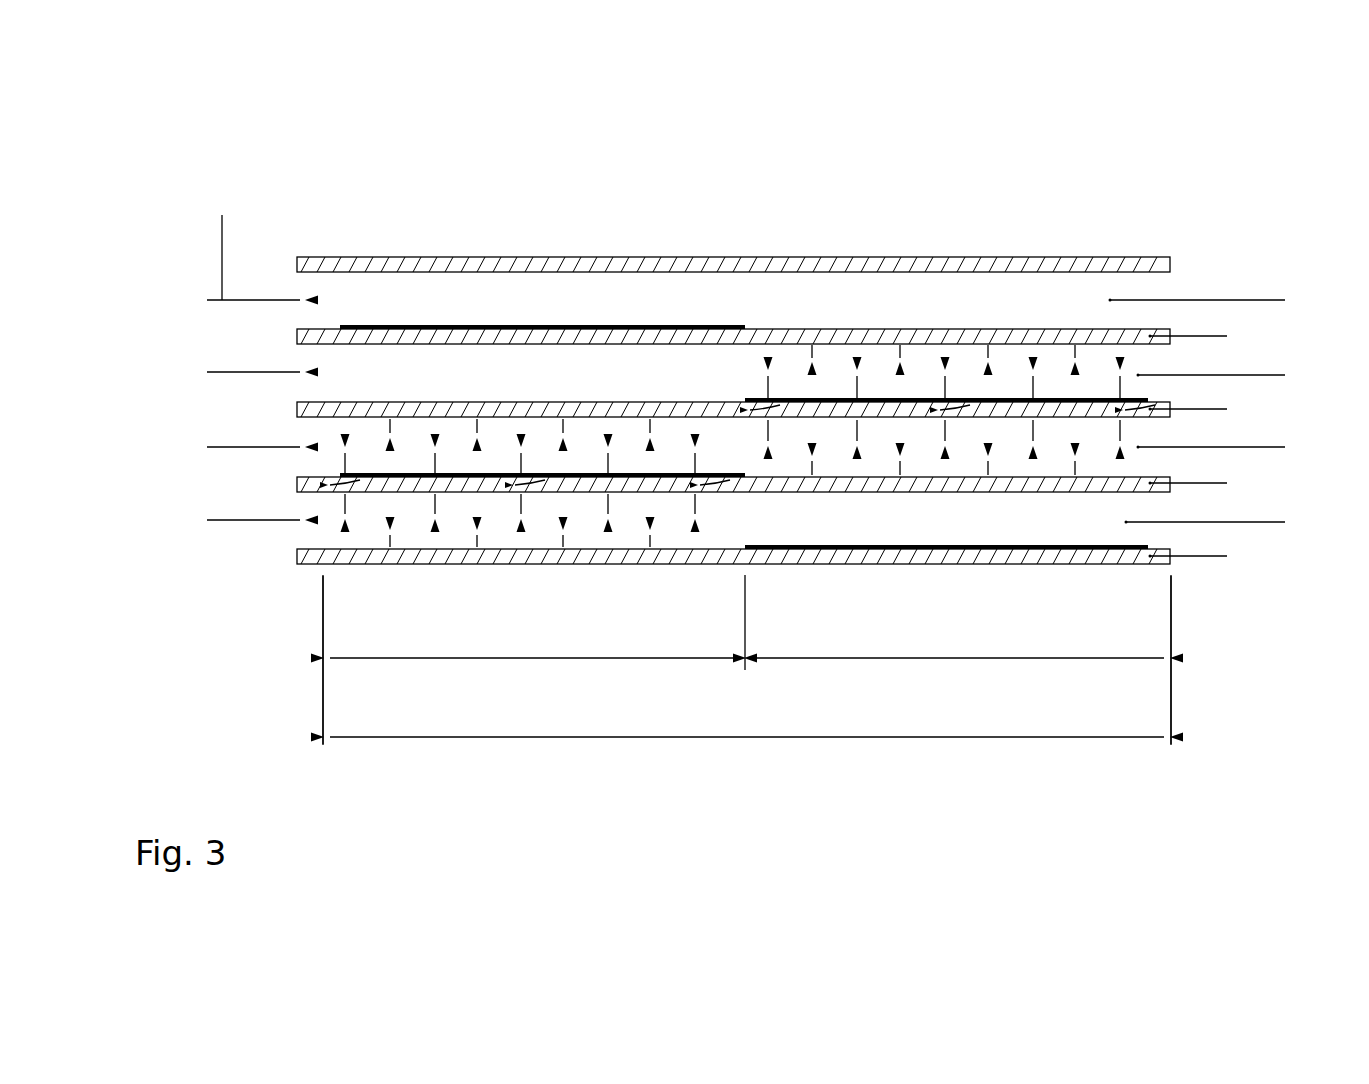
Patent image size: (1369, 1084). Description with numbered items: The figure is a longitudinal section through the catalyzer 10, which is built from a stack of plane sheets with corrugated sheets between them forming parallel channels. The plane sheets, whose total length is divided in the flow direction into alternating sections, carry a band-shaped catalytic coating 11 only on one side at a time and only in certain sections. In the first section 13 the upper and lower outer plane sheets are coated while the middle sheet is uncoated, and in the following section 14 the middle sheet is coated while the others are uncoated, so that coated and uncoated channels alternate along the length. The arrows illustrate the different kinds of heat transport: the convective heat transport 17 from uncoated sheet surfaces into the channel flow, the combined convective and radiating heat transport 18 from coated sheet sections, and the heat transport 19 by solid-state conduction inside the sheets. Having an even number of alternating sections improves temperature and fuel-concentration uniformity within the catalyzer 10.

The catalyzer 10 is at (769, 433).
The catalytic coating 11 is at (434, 326).
The first section 13 is at (535, 757).
The second section 14 is at (961, 757).
The convective heat transport 17 is at (563, 430).
The combined convective and radiating heat transport 18 is at (608, 458).
The heat transport via solid-state conduction 19 is at (732, 503).